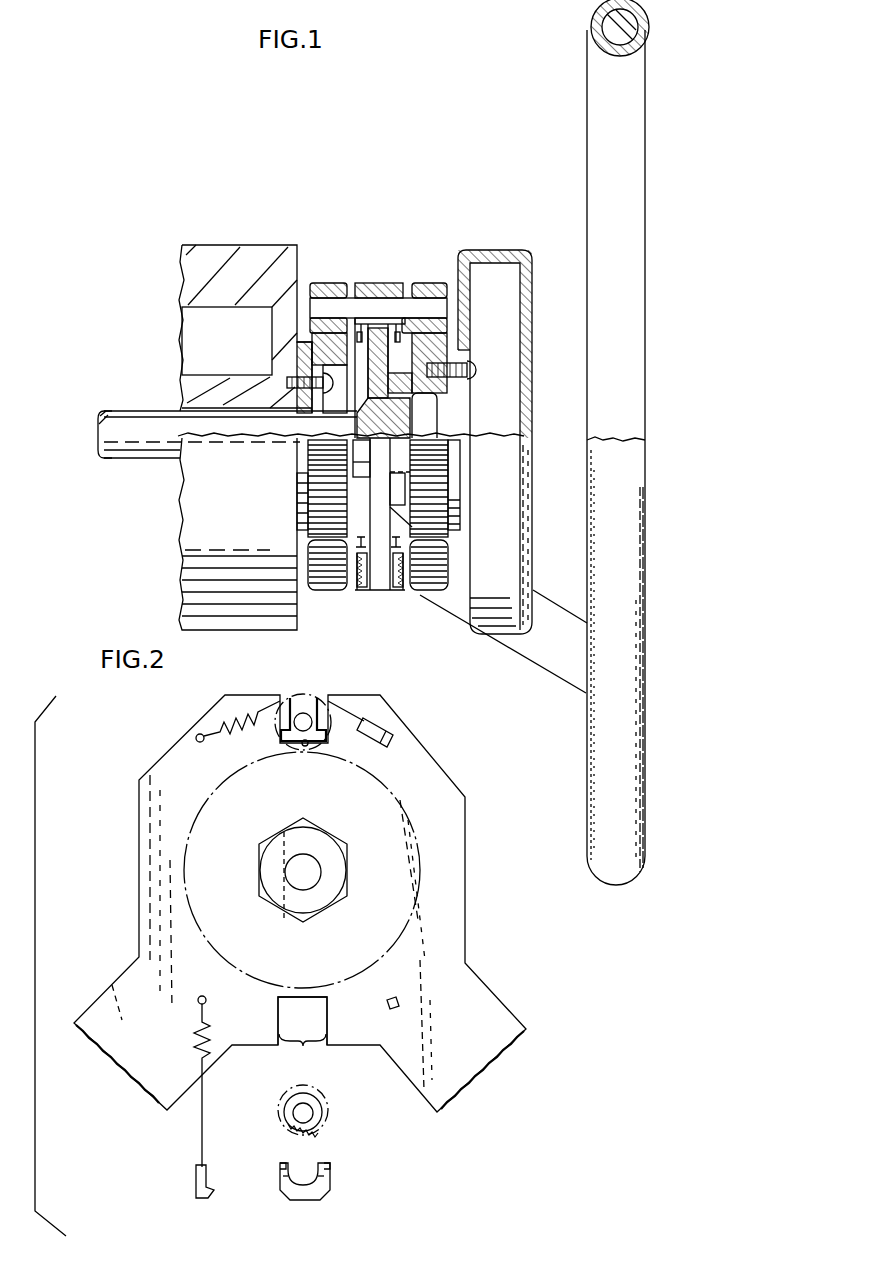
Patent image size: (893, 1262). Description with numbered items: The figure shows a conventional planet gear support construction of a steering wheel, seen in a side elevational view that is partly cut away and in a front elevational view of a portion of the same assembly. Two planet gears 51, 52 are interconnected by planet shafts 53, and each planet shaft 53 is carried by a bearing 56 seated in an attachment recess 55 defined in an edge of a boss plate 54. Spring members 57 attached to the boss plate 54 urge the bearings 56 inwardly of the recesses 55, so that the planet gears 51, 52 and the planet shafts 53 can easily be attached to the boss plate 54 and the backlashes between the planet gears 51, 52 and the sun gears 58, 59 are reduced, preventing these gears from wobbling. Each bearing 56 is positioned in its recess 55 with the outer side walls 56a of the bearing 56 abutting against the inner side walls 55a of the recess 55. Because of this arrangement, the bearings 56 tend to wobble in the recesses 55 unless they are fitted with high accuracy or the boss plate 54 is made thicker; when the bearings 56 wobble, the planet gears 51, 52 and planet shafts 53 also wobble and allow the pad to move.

In FIG. 1, the planet gear 51 is at (317, 284).
In FIG. 1, the planet gear 52 is at (433, 285).
In FIG. 2, the planet gear 52 is at (317, 698).
In FIG. 1, the planet shaft 53 is at (353, 298).
In FIG. 2, the planet shaft 53 is at (298, 716).
In FIG. 1, the boss plate 54 is at (378, 588).
In FIG. 2, the boss plate 54 is at (464, 817).
In FIG. 2, the attachment recess 55 is at (306, 748).
In FIG. 2, the inner side wall 55a is at (302, 1051).
In FIG. 1, the bearing 56 is at (385, 283).
In FIG. 2, the bearing 56 is at (326, 729).
In FIG. 2, the outer side wall 56a is at (283, 1176).
In FIG. 1, the spring member 57 is at (361, 578).
In FIG. 2, the spring member 57 is at (251, 722).
In FIG. 1, the sun gear 58 is at (308, 486).
In FIG. 1, the sun gear 59 is at (448, 497).
In FIG. 2, the sun gear 59 is at (408, 816).